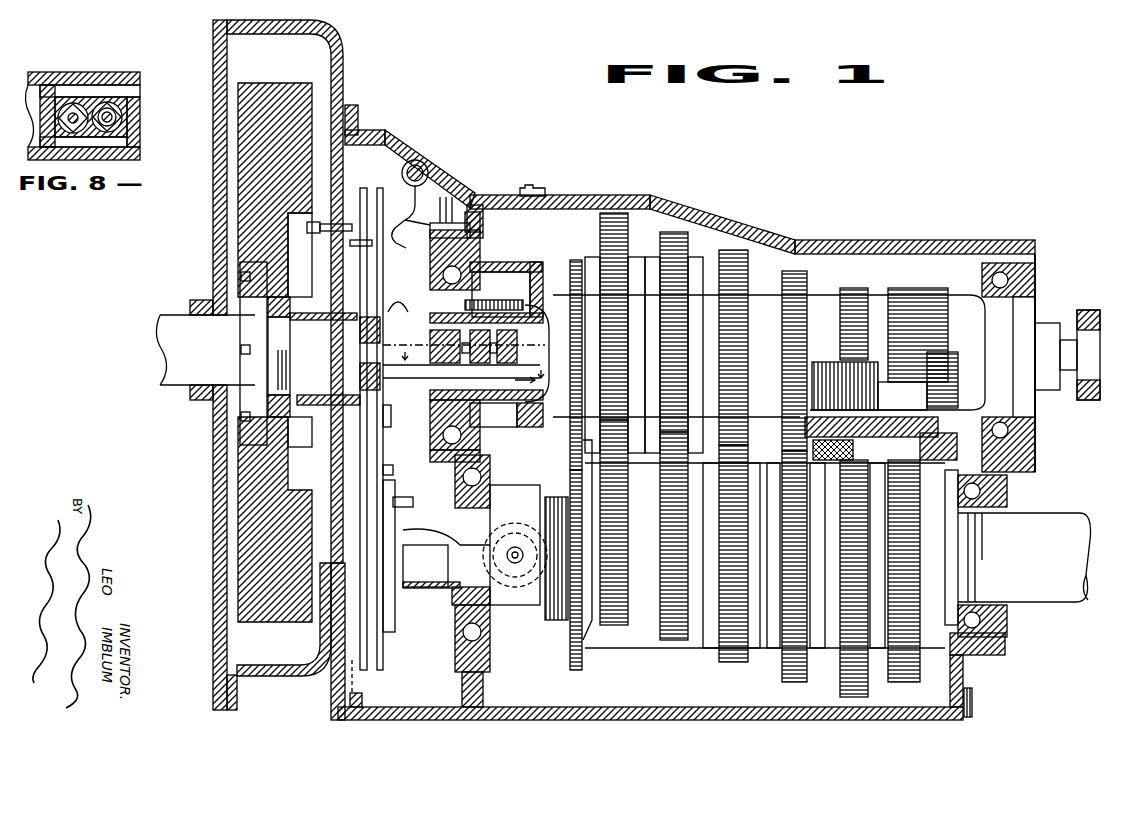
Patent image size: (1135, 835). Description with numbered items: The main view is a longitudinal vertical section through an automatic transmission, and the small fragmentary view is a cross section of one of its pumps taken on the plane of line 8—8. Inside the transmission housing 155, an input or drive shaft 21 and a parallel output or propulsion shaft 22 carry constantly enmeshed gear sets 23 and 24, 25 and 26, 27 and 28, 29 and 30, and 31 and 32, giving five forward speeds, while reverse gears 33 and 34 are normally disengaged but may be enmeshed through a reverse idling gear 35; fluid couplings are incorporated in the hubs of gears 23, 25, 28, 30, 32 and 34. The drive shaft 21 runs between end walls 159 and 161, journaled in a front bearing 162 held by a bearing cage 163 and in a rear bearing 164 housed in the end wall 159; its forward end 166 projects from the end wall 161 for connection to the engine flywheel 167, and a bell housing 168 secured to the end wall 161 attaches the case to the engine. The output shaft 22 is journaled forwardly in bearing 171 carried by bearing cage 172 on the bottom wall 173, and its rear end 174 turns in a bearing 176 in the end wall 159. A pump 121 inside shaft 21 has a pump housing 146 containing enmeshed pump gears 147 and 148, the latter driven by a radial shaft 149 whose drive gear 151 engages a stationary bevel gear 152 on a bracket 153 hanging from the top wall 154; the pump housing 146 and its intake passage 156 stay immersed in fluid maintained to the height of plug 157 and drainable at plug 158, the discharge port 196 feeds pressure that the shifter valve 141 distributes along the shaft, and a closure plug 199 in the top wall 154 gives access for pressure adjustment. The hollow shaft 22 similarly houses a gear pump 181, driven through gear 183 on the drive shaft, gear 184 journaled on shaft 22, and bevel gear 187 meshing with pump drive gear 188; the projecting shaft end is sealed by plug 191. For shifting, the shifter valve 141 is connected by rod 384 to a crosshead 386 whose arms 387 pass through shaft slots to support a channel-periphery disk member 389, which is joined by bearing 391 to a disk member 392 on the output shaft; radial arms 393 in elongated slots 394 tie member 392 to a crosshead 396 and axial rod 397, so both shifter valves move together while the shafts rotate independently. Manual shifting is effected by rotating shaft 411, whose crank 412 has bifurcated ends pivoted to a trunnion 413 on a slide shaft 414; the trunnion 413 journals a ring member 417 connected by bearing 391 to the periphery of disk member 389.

In FIG. 1, the section line 8 is at (471, 358).
In FIG. 1, the drive shaft 21 is at (543, 300).
In FIG. 1, the output shaft 22 is at (440, 590).
In FIG. 1, the driving gear 23 is at (600, 238).
In FIG. 1, the driven gear 24 is at (614, 626).
In FIG. 1, the driving gear 25 is at (660, 236).
In FIG. 1, the driven gear 26 is at (674, 642).
In FIG. 1, the driving gear 27 is at (748, 266).
In FIG. 1, the driven gear 28 is at (736, 663).
In FIG. 1, the driving gear 29 is at (808, 277).
In FIG. 1, the driven gear 30 is at (795, 683).
In FIG. 1, the driving gear 31 is at (855, 289).
In FIG. 1, the driven gear 32 is at (840, 695).
In FIG. 1, the reverse gear 33 is at (910, 289).
In FIG. 1, the reverse gear 34 is at (892, 680).
In FIG. 1, the reverse idling gear 35 is at (957, 352).
In FIG. 1, the pump 121 is at (455, 362).
In FIG. 8, the pump 121 is at (125, 70).
In FIG. 1, the shifter valve 141 is at (516, 382).
In FIG. 1, the pump housing 146 is at (460, 356).
In FIG. 8, the pump housing 146 is at (128, 142).
In FIG. 8, the pump gear 147 is at (77, 103).
In FIG. 8, the pump gear 148 is at (127, 113).
In FIG. 1, the shaft 149 is at (493, 353).
In FIG. 8, the shaft 149 is at (140, 120).
In FIG. 1, the drive gear 151 is at (520, 413).
In FIG. 1, the stationary bevel gear 152 is at (493, 327).
In FIG. 1, the bracket 153 is at (500, 264).
In FIG. 1, the top wall 154 is at (602, 196).
In FIG. 1, the transmission housing 155 is at (697, 205).
In FIG. 8, the intake passage 156 is at (130, 150).
In FIG. 1, the plug 157 is at (402, 295).
In FIG. 1, the drain plug 158 is at (973, 700).
In FIG. 1, the end wall 159 is at (963, 677).
In FIG. 1, the end wall 161 is at (337, 696).
In FIG. 1, the front bearing 162 is at (430, 437).
In FIG. 1, the bearing cage 163 is at (430, 455).
In FIG. 1, the bearing 164 is at (1003, 270).
In FIG. 1, the forward end 166 is at (292, 322).
In FIG. 1, the flywheel 167 is at (258, 85).
In FIG. 1, the bell housing 168 is at (325, 50).
In FIG. 1, the bearing 171 is at (456, 478).
In FIG. 1, the bearing cage 172 is at (462, 670).
In FIG. 1, the bottom wall 173 is at (492, 718).
In FIG. 1, the rear end 174 is at (1055, 520).
In FIG. 1, the bearing 176 is at (1005, 628).
In FIG. 1, the gear pump 181 is at (471, 545).
In FIG. 1, the gear 183 is at (570, 437).
In FIG. 1, the gear 184 is at (570, 460).
In FIG. 1, the bevel gear 187 is at (556, 498).
In FIG. 1, the drive gear 188 is at (505, 540).
In FIG. 1, the plug 191 is at (287, 372).
In FIG. 8, the discharge port 196 is at (140, 85).
In FIG. 1, the closure plug 199 is at (540, 190).
In FIG. 1, the rod 384 is at (468, 368).
In FIG. 1, the crosshead 386 is at (386, 384).
In FIG. 1, the arms 387 is at (362, 330).
In FIG. 1, the disk-like member 389 is at (384, 277).
In FIG. 1, the bearing 391 is at (384, 413).
In FIG. 1, the disk-like member 392 is at (384, 470).
In FIG. 1, the radial arms 393 is at (417, 500).
In FIG. 1, the elongated slots 394 is at (420, 508).
In FIG. 1, the crosshead 396 is at (440, 624).
In FIG. 1, the axial rod 397 is at (425, 566).
In FIG. 1, the shaft 411 is at (418, 162).
In FIG. 1, the crank 412 is at (435, 170).
In FIG. 1, the trunnion 413 is at (395, 208).
In FIG. 1, the slide shaft 414 is at (322, 222).
In FIG. 1, the ring member 417 is at (370, 246).